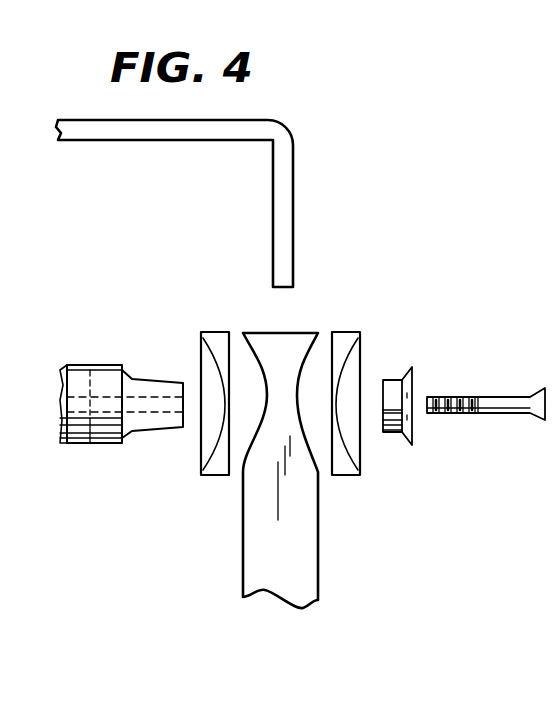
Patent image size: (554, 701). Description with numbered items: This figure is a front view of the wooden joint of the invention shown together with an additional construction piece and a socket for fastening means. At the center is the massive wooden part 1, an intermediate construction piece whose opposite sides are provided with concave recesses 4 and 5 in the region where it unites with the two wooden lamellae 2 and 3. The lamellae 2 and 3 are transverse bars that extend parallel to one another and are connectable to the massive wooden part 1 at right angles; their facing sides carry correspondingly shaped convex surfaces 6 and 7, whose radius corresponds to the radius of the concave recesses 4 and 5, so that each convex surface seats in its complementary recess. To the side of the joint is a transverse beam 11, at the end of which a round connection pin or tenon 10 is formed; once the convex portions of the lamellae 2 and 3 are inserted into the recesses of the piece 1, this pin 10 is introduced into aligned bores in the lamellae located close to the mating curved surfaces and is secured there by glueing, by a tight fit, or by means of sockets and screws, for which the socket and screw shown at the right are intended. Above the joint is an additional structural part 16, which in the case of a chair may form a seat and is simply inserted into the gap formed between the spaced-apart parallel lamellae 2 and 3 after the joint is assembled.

The massive wooden part 1 is at (248, 548).
The wooden lamella 2 is at (213, 339).
The wooden lamella 3 is at (342, 340).
The concave recess 4 is at (267, 407).
The concave recess 5 is at (297, 413).
The convex surface 6 is at (220, 380).
The convex surface 7 is at (340, 380).
The connection pin 10 is at (152, 422).
The transverse beam 11 is at (108, 365).
The additional structural part 16 is at (150, 132).